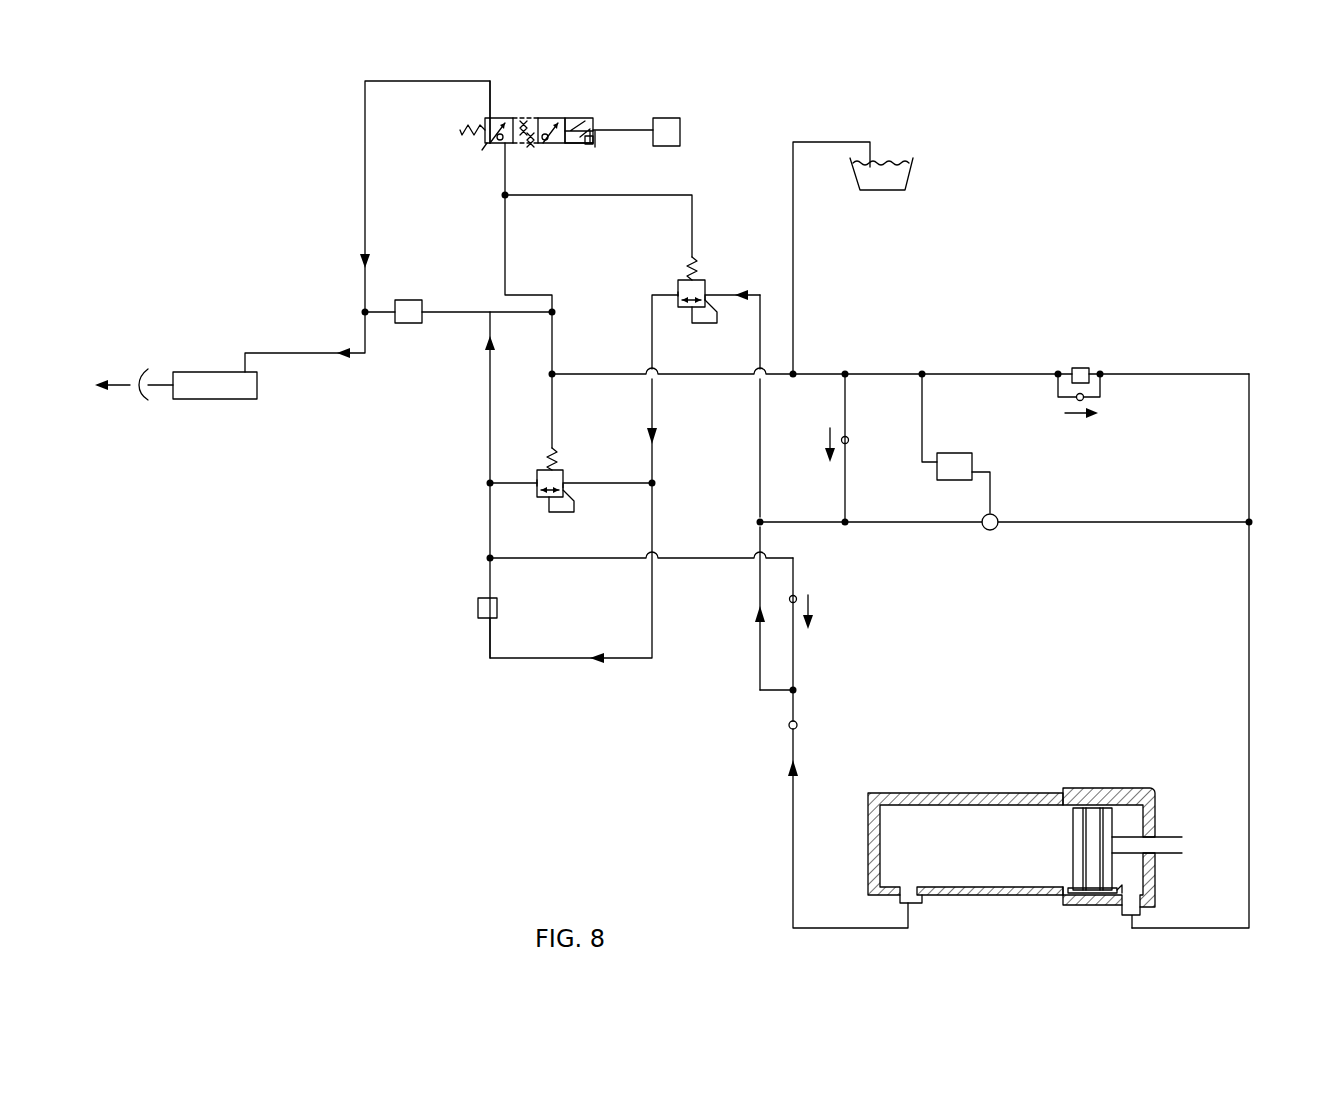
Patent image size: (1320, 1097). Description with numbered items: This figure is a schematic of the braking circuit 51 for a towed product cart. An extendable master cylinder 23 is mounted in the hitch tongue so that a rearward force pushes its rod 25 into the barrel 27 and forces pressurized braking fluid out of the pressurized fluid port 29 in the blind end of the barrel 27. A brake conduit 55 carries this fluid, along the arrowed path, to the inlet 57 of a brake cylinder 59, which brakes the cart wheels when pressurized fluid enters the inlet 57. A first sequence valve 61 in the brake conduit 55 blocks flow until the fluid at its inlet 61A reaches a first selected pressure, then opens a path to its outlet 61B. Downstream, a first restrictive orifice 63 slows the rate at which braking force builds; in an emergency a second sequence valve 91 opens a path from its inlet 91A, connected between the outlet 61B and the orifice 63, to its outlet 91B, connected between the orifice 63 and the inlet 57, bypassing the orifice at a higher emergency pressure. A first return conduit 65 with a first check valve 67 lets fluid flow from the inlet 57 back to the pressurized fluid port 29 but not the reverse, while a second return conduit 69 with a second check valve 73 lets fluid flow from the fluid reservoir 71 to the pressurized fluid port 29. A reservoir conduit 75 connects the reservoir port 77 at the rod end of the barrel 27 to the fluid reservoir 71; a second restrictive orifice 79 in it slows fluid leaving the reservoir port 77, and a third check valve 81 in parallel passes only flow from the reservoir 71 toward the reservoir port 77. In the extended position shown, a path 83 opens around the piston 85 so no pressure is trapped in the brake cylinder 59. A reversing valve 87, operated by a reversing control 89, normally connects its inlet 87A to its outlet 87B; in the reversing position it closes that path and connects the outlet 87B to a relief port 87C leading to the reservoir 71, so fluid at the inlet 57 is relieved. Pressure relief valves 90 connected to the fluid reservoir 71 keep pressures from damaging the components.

The master cylinder 23 is at (1155, 790).
The rod 25 is at (1170, 853).
The barrel 27 is at (950, 793).
The pressurized fluid port 29 is at (925, 905).
The braking circuit 51 is at (471, 779).
The brake conduit 55 is at (365, 172).
The inlet 57 is at (245, 370).
The brake cylinder 59 is at (208, 399).
The first sequence valve 61 is at (706, 272).
The inlet 61A is at (707, 297).
The outlet 61B is at (678, 292).
The first restrictive orifice 63 is at (478, 608).
The first return conduit 65 is at (568, 558).
The first check valve 67 is at (797, 597).
The second return conduit 69 is at (845, 490).
The fluid reservoir 71 is at (905, 172).
The second check valve 73 is at (841, 438).
The reservoir conduit 75 is at (1249, 546).
The reservoir port 77 is at (1120, 917).
The second restrictive orifice 79 is at (1082, 368).
The third check valve 81 is at (1078, 399).
The path 83 is at (1070, 888).
The piston 85 is at (1073, 826).
The reversing valve 87 is at (582, 118).
The inlet 87A is at (487, 143).
The outlet 87B is at (495, 118).
The relief port 87C is at (512, 143).
The reversing control 89 is at (680, 120).
The pressure relief valves 90 is at (410, 323).
The second sequence valve 91 is at (563, 478).
The inlet 91A is at (565, 486).
The outlet 91B is at (537, 480).